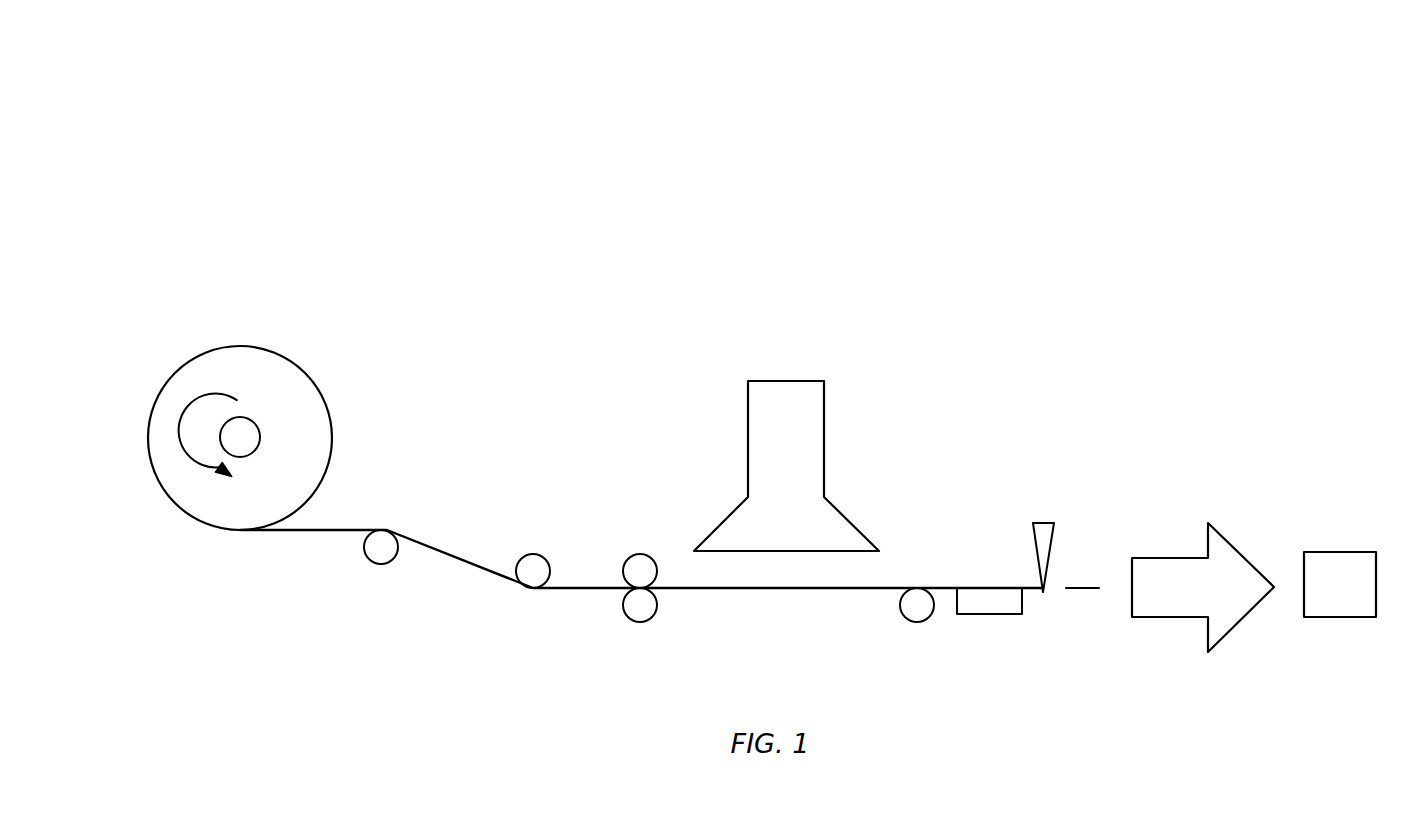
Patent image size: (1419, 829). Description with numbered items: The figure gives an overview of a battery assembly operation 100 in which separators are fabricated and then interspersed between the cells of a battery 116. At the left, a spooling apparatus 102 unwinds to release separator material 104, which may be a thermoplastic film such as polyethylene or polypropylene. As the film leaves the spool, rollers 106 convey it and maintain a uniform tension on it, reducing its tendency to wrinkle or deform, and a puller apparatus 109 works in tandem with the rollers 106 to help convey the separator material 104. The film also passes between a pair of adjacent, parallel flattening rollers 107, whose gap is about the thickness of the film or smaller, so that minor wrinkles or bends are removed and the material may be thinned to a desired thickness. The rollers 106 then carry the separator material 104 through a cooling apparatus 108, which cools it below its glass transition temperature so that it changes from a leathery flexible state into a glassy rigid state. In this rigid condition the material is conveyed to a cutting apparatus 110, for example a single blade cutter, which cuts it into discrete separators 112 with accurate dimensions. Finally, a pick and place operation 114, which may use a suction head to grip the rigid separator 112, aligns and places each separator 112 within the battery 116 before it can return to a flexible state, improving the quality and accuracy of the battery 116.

The battery assembly operation 100 is at (176, 100).
The spooling apparatus 102 is at (297, 365).
The separator material 104 is at (335, 530).
The rollers 106 is at (381, 564).
The flattening rollers 107 is at (605, 542).
The cooling apparatus 108 is at (782, 381).
The puller apparatus 109 is at (992, 614).
The cutting apparatus 110 is at (1043, 523).
The separator 112 is at (1082, 588).
The pick and place operation 114 is at (1172, 617).
The battery 116 is at (1347, 617).